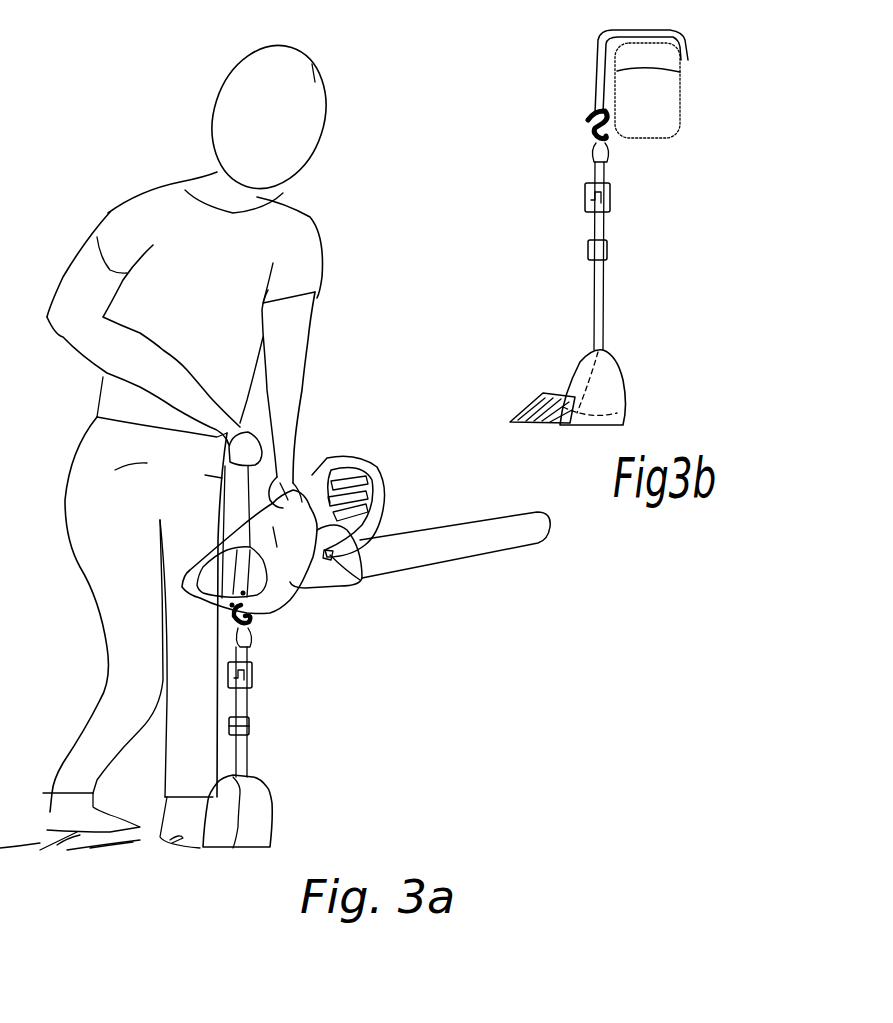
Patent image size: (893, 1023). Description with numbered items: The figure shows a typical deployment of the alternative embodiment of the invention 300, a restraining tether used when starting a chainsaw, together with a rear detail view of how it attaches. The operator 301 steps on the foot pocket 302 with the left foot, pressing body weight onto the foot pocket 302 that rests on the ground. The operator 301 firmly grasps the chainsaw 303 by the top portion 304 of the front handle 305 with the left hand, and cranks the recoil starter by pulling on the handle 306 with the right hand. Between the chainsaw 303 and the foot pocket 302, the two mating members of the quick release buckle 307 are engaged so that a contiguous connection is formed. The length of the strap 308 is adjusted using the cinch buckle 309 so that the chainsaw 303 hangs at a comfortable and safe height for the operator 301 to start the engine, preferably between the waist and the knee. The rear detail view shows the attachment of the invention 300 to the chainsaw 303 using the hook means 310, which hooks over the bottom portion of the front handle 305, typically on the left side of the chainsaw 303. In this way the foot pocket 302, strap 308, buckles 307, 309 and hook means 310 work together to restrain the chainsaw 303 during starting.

In FIG. 3A, the invention 300 is at (357, 853).
In FIG. 3B, the invention 300 is at (643, 427).
In FIG. 3A, the operator 301 is at (155, 90).
In FIG. 3A, the foot pocket 302 is at (185, 848).
In FIG. 3B, the foot pocket 302 is at (508, 420).
In FIG. 3A, the chainsaw 303 is at (385, 590).
In FIG. 3B, the chainsaw 303 is at (685, 110).
In FIG. 3A, the top portion 304 is at (312, 475).
In FIG. 3A, the front handle 305 is at (290, 605).
In FIG. 3B, the front handle 305 is at (593, 73).
In FIG. 3A, the handle 306 is at (247, 453).
In FIG. 3A, the quick release buckle 307 is at (255, 680).
In FIG. 3B, the quick release buckle 307 is at (597, 197).
In FIG. 3A, the strap 308 is at (250, 705).
In FIG. 3B, the strap 308 is at (597, 250).
In FIG. 3A, the cinch buckle 309 is at (250, 730).
In FIG. 3B, the hook means 310 is at (580, 127).